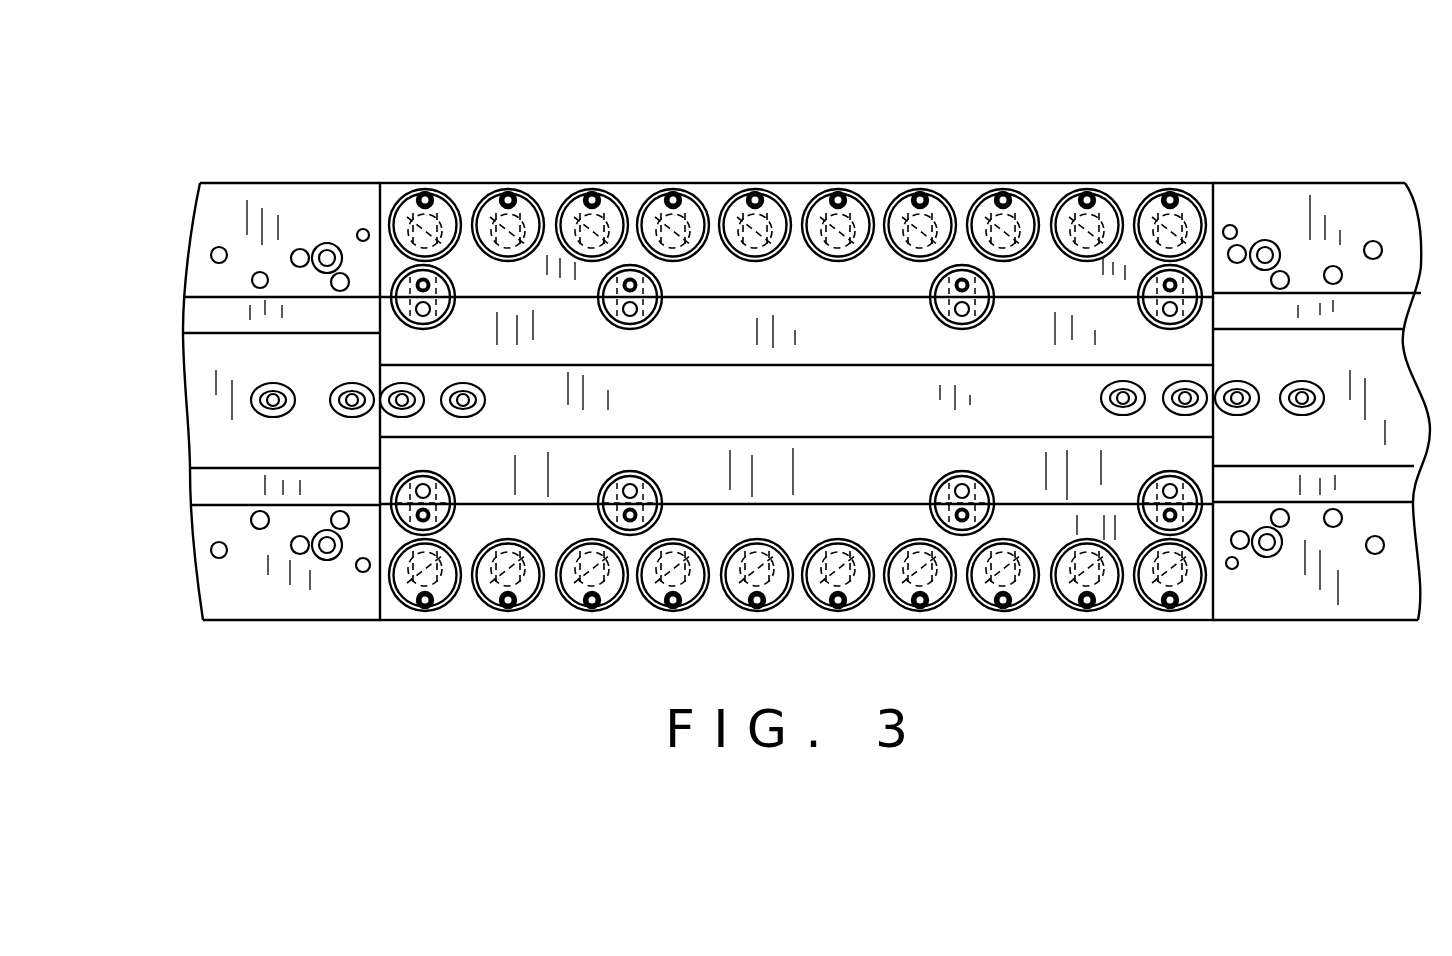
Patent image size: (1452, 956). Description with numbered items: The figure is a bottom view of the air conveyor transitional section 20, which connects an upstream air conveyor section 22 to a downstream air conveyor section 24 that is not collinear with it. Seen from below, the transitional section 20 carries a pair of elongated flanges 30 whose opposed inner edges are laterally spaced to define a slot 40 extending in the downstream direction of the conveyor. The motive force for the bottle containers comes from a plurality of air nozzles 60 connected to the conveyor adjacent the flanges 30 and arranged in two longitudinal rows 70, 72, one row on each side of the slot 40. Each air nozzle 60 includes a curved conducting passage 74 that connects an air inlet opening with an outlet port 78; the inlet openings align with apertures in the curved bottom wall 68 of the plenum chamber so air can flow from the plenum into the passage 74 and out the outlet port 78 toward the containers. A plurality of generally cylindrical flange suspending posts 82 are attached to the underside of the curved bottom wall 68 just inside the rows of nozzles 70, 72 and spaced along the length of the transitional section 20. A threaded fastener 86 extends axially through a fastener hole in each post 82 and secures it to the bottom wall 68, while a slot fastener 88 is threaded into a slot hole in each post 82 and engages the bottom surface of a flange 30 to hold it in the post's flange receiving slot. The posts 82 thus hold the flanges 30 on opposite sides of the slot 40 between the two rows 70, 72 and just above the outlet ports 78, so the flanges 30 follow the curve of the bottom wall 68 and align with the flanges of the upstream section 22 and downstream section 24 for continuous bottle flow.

The air conveyor transitional section 20 is at (793, 168).
The upstream air conveyor section 22 is at (259, 170).
The downstream air conveyor section 24 is at (1240, 170).
The elongated flanges 30 is at (603, 363).
The slot 40 is at (690, 437).
The air nozzles 60 is at (996, 198).
The bottom wall 68 is at (1134, 195).
The longitudinal row of air nozzles 70 is at (396, 178).
The longitudinal row of air nozzles 72 is at (396, 624).
The curved conducting passage 74 is at (527, 237).
The outlet port 78 is at (545, 250).
The flange suspending posts 82 is at (934, 290).
The threaded fastener 86 is at (960, 279).
The slot fastener 88 is at (969, 302).